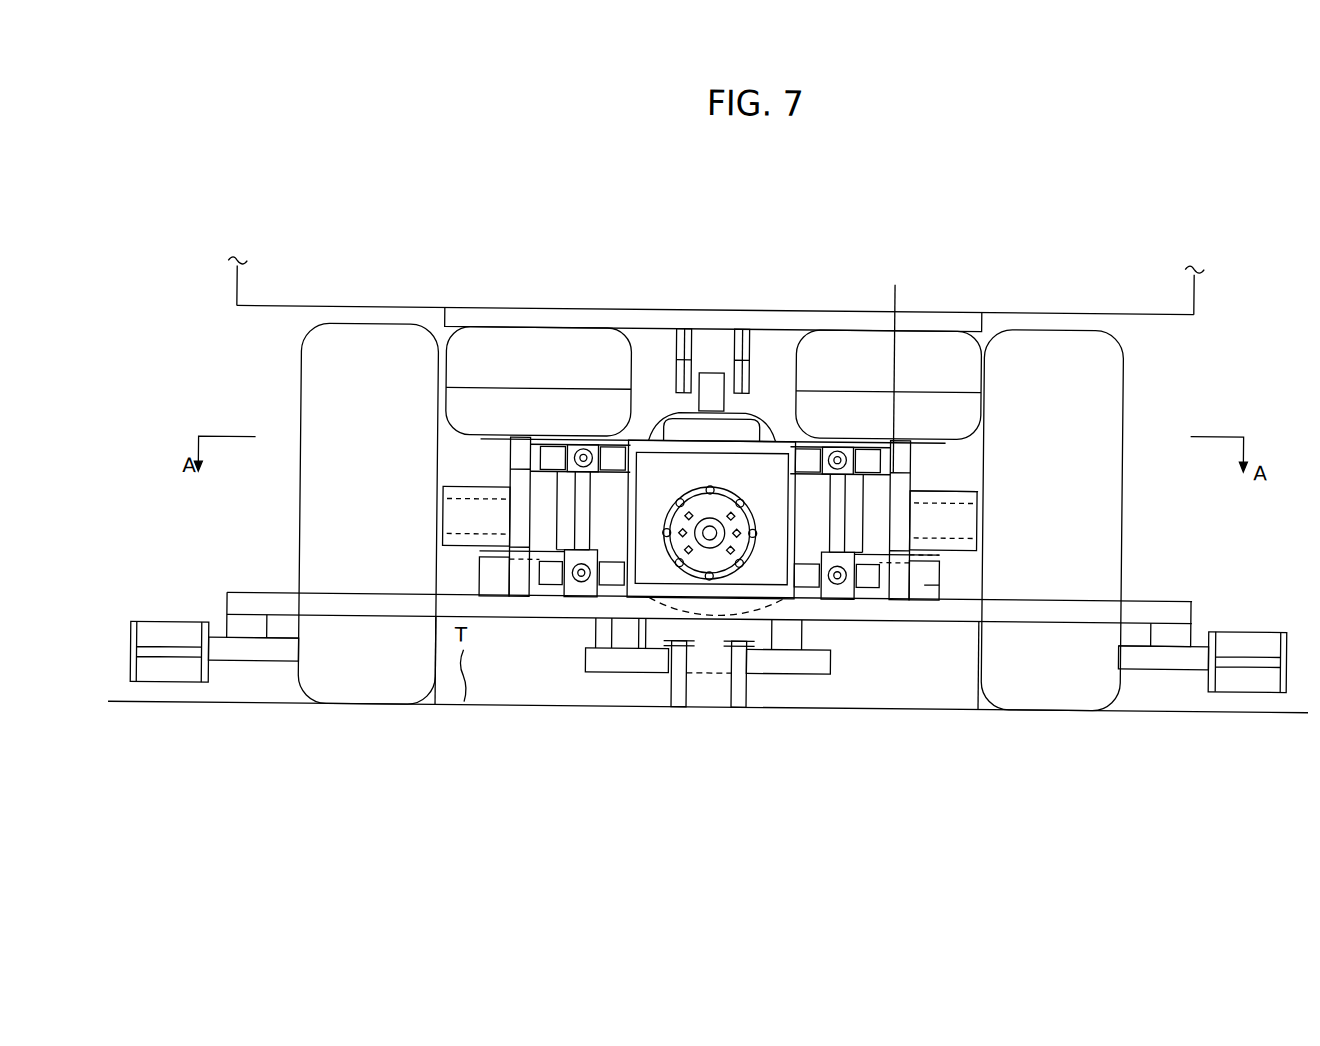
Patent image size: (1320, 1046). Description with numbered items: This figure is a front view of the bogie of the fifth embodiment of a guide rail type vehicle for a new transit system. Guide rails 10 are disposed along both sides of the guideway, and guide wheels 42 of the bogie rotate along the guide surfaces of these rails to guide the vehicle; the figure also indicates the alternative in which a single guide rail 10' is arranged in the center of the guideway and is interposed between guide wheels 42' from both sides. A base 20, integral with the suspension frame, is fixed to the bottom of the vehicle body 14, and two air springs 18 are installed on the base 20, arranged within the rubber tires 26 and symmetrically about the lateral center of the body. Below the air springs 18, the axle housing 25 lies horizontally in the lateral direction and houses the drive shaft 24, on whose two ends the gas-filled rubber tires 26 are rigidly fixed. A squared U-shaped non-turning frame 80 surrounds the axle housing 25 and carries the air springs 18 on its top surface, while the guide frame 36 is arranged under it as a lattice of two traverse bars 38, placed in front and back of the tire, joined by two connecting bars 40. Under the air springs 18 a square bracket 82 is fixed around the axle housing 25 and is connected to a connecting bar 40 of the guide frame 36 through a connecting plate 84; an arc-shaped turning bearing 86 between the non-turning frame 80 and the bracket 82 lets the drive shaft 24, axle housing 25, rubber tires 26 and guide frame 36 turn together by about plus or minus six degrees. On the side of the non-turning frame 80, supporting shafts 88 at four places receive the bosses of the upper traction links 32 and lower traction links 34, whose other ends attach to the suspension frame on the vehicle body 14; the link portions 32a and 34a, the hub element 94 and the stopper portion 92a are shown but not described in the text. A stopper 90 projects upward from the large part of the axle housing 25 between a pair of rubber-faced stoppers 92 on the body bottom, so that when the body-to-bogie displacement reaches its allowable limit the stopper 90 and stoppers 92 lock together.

The guide rail 10 is at (710, 632).
The guide rail 10' is at (710, 699).
The vehicle body 14 is at (1165, 294).
The air spring 18 is at (987, 368).
The base 20 is at (301, 402).
The drive shaft 24 is at (962, 489).
The axle housing 25 is at (915, 496).
The rubber tire 26 is at (1100, 555).
The upper traction link 32 is at (580, 447).
The bolt post 32a is at (710, 512).
The lower traction link 34 is at (592, 569).
The mounting box 34a is at (575, 563).
The guide frame 36 is at (542, 635).
The traverse bar 38 is at (553, 608).
The connecting bar 40 is at (496, 584).
The guide wheel 42 is at (706, 603).
The guide wheel 42' is at (708, 684).
The non-turning frame 80 is at (602, 614).
The bracket 82 is at (512, 494).
The connecting plate 84 is at (940, 557).
The turning bearing 86 is at (898, 637).
The supporting shaft 88 is at (617, 446).
The stopper 90 is at (726, 393).
The stopper 92 is at (680, 358).
The guide post flange 92a is at (735, 357).
The hub / gear box 94 is at (718, 515).